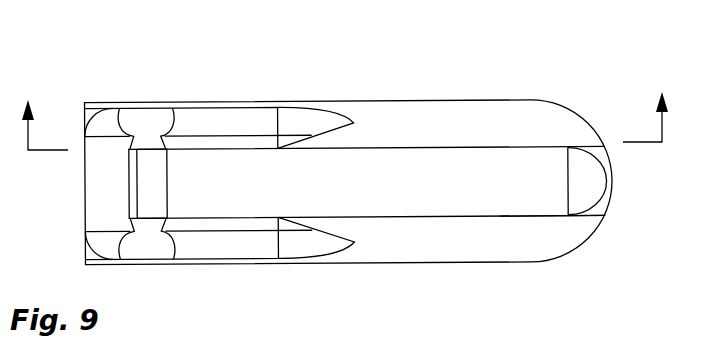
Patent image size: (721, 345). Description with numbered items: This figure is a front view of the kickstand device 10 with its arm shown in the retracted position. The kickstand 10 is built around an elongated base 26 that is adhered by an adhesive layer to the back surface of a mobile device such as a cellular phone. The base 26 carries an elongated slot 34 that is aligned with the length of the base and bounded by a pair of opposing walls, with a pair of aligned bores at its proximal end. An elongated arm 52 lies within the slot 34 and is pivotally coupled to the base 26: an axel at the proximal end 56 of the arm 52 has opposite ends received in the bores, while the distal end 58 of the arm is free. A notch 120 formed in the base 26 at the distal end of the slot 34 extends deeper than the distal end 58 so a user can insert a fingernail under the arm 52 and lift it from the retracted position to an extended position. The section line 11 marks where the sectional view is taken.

The kickstand device 10 is at (223, 90).
The section line 11- 11 is at (345, 107).
The base 26 is at (422, 117).
The slot 34 is at (469, 147).
The arm 52 is at (497, 190).
The proximal end 56 is at (196, 190).
The distal end 58 is at (548, 201).
The notch 120 is at (592, 180).